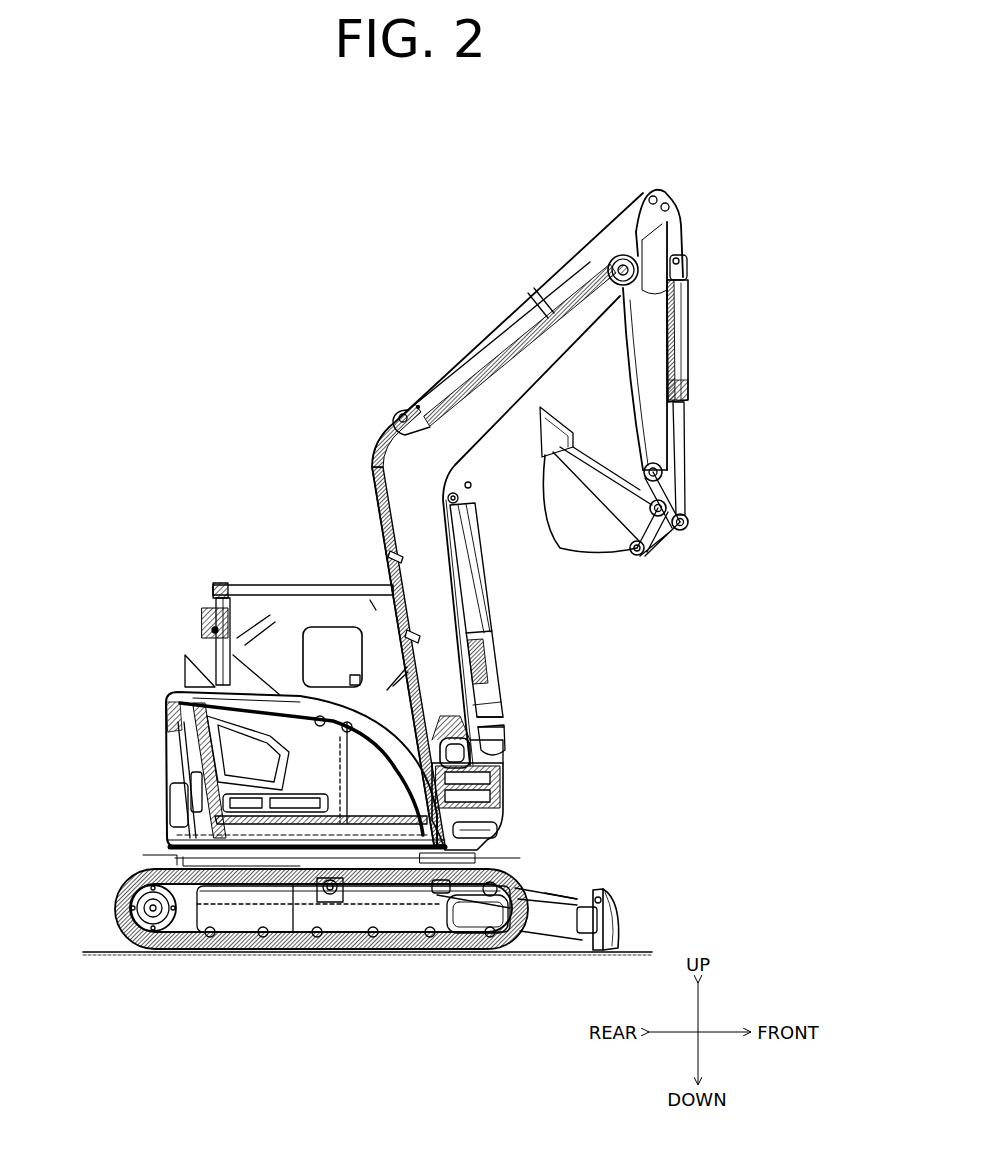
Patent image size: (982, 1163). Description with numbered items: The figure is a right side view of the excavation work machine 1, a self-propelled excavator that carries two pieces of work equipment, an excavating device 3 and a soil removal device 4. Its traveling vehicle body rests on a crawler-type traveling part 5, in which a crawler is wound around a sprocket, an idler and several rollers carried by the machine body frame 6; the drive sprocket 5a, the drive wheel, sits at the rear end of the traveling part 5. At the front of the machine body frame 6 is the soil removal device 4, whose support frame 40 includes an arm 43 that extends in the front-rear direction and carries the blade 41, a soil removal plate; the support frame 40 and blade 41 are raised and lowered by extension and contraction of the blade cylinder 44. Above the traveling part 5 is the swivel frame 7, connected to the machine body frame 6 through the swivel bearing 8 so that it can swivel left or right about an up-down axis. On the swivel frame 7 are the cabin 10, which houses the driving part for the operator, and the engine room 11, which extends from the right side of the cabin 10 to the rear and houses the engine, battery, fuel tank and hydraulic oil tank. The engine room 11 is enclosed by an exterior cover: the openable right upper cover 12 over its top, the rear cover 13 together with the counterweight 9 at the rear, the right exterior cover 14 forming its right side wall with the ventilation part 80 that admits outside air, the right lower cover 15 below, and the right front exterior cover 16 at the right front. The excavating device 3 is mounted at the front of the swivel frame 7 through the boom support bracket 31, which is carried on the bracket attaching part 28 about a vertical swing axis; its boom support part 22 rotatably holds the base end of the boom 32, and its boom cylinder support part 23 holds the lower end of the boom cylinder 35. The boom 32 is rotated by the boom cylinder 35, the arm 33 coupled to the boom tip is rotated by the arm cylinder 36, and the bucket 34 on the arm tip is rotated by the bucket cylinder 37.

The excavation work machine 1 is at (401, 561).
The excavating device 3 is at (522, 245).
The soil removal device 4 is at (654, 898).
The traveling part 5 is at (124, 916).
The drive sprocket 5a is at (112, 912).
The machine body frame 6 is at (485, 858).
The swivel frame 7 is at (150, 845).
The swivel bearing 8 is at (183, 857).
The counterweight 9 is at (166, 801).
The cabin 10 is at (267, 587).
The engine room 11 is at (163, 773).
The right upper cover 12 is at (200, 642).
The rear cover 13 is at (167, 737).
The right exterior cover 14 is at (314, 896).
The right lower cover 15 is at (371, 890).
The right front exterior cover 16 is at (452, 925).
The boom support part 22 is at (508, 752).
The boom cylinder support part 23 is at (510, 812).
The bracket attaching part 28 is at (497, 838).
The boom support bracket 31 is at (566, 757).
The boom 32 is at (495, 425).
The arm 33 is at (633, 405).
The bucket 34 is at (582, 547).
The boom cylinder 35 is at (492, 680).
The arm cylinder 36 is at (488, 331).
The bucket cylinder 37 is at (692, 335).
The support frame 40 is at (557, 882).
The blade 41 is at (619, 917).
The arm 43 is at (592, 895).
The blade cylinder 44 is at (560, 892).
The ventilation part 80 is at (170, 706).